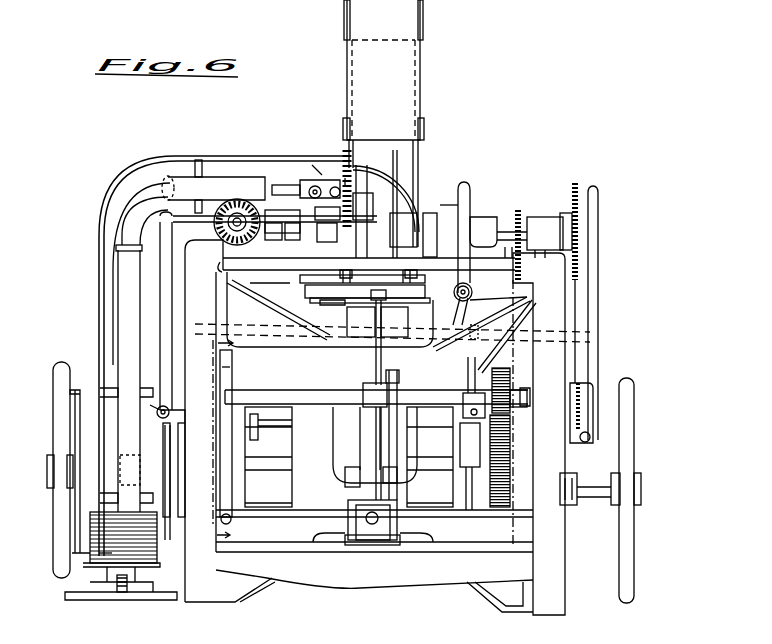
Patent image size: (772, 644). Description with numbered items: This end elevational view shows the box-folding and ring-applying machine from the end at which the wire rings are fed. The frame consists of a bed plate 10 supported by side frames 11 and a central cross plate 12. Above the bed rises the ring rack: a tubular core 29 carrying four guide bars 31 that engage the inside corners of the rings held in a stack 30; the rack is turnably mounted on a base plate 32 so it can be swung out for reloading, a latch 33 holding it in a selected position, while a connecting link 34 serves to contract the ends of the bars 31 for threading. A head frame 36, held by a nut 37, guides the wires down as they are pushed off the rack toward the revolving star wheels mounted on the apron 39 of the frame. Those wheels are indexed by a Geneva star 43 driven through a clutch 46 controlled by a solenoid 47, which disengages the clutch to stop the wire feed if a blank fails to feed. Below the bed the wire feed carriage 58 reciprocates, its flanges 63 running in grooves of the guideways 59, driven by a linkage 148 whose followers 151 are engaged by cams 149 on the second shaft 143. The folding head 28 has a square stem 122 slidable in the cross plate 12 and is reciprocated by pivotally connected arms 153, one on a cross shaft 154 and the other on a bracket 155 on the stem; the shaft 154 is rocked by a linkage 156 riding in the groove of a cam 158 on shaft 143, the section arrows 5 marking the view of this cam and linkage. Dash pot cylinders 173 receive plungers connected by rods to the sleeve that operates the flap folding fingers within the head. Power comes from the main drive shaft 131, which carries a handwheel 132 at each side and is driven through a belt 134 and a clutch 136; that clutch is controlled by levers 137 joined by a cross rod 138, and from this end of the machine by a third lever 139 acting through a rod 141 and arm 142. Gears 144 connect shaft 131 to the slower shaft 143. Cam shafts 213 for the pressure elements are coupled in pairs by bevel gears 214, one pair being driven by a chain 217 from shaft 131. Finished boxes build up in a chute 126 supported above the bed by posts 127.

The chute 126 is at (410, 78).
The head frame 36 is at (407, 185).
The nut 37 is at (363, 182).
The guide bars 31 is at (98, 224).
The levers 137 is at (125, 203).
The tubular core 29 is at (127, 300).
The shaft 213 is at (222, 223).
The latch 33 is at (293, 178).
The connecting link 34 is at (312, 165).
The base plate 32 is at (345, 178).
The posts 127 is at (407, 153).
The Geneva star 43 is at (449, 212).
The clutch 46 is at (461, 200).
The third lever 139 is at (469, 198).
The solenoid 47 is at (480, 221).
The chain 217 is at (578, 305).
The bed plate 10 is at (197, 253).
The side frames 11 is at (200, 590).
The central cross plate 12 is at (480, 597).
The section line 5 is at (216, 440).
The folding head 28 is at (398, 312).
The flanges 63 is at (337, 284).
The grooved guideways 59 is at (417, 272).
The wire feed carriage 58 is at (360, 292).
The apron 39 is at (263, 265).
The bevel gears 214 is at (218, 268).
The square stem 122 is at (373, 454).
The dash pot cylinders 173 is at (392, 418).
The bracket 155 is at (395, 474).
The pivotally connected arms 153 is at (367, 494).
The cross shaft 154 is at (432, 513).
The cam 158 is at (243, 372).
The second shaft 143 is at (277, 428).
The main drive shaft 131 is at (281, 457).
The linkage 156 is at (225, 440).
The followers 151 is at (470, 433).
The cams 149 is at (468, 481).
The linkage 148 is at (467, 378).
The cross rod 138 is at (432, 343).
The rod 141 is at (475, 296).
The arm 142 is at (480, 318).
The gears 144 is at (510, 478).
The handwheel 132 is at (63, 428).
The belt 134 is at (88, 390).
The stack 30 is at (98, 532).
The clutch 136 is at (167, 540).